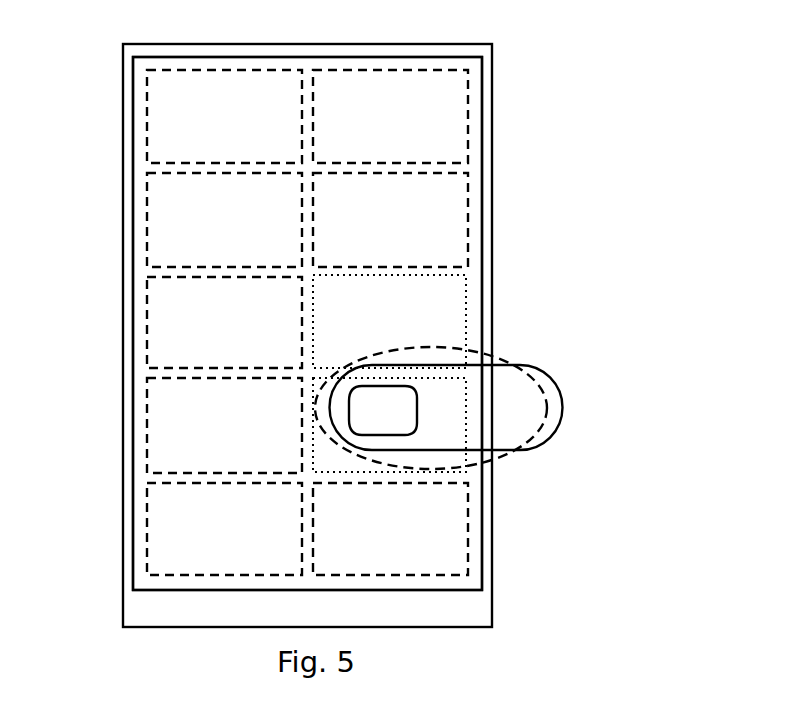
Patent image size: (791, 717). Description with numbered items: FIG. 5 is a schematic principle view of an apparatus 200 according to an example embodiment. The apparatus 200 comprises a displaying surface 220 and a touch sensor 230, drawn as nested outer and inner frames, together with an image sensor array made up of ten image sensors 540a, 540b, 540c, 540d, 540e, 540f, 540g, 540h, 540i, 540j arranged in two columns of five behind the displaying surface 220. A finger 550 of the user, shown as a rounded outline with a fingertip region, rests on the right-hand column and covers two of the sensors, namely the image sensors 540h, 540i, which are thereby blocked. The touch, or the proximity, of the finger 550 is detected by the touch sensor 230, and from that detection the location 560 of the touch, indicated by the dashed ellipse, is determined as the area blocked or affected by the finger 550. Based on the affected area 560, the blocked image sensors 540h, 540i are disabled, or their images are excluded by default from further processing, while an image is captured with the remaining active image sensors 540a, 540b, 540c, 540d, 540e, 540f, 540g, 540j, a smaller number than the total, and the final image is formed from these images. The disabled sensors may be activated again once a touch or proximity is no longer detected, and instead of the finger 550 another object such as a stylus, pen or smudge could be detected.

The apparatus 200 is at (103, 18).
The displaying surface 220 is at (489, 44).
The touch sensor 230 is at (307, 323).
The image sensor 540a is at (162, 123).
The image sensor 540b is at (162, 218).
The image sensor 540c is at (162, 323).
The image sensor 540d is at (162, 433).
The image sensor 540e is at (162, 537).
The image sensor 540f is at (447, 132).
The image sensor 540g is at (447, 218).
The image sensor 540h is at (448, 307).
The image sensor 540i is at (447, 467).
The image sensor 540j is at (447, 560).
The finger 550 is at (557, 408).
The location of the touch 560 is at (467, 358).